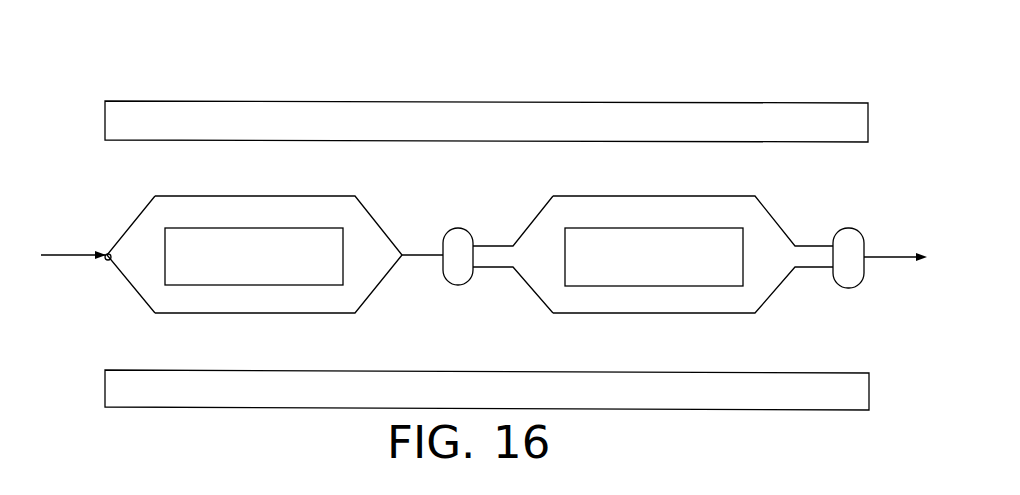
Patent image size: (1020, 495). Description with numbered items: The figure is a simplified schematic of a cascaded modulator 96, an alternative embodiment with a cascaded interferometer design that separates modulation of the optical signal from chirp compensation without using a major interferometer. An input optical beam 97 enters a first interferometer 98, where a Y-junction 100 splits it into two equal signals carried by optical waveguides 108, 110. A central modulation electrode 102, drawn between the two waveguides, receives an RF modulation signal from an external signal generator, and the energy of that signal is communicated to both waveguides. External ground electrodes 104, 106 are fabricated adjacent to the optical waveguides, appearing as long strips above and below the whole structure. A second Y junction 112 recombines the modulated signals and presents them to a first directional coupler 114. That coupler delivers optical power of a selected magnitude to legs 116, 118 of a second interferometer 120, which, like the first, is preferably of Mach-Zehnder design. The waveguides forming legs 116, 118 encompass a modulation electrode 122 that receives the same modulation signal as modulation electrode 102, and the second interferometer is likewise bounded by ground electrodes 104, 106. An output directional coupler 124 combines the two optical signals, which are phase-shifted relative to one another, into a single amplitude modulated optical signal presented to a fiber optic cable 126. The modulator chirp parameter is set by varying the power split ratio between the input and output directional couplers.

The cascaded modulator 96 is at (646, 96).
The input optical beam 97 is at (81, 250).
The first interferometer 98 is at (126, 209).
The Y-junction 100 is at (108, 262).
The central modulation electrode 102 is at (262, 228).
The ground electrode 104 is at (250, 101).
The ground electrode 106 is at (268, 370).
The optical waveguide 108 is at (191, 196).
The optical waveguide 110 is at (218, 314).
The second Y junction 112 is at (404, 258).
The first directional coupler 114 is at (450, 240).
The leg 116 is at (633, 196).
The leg 118 is at (613, 315).
The second interferometer 120 is at (519, 220).
The modulation electrode 122 is at (668, 228).
The output directional coupler 124 is at (843, 242).
The fiber optic cable 126 is at (880, 256).